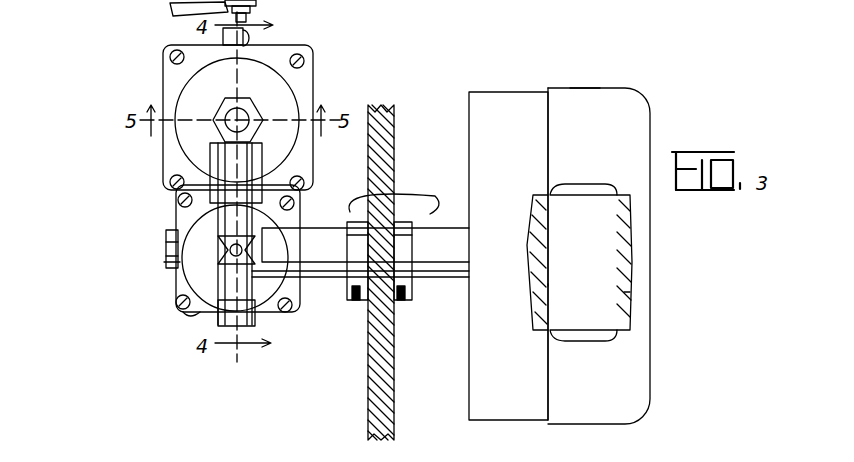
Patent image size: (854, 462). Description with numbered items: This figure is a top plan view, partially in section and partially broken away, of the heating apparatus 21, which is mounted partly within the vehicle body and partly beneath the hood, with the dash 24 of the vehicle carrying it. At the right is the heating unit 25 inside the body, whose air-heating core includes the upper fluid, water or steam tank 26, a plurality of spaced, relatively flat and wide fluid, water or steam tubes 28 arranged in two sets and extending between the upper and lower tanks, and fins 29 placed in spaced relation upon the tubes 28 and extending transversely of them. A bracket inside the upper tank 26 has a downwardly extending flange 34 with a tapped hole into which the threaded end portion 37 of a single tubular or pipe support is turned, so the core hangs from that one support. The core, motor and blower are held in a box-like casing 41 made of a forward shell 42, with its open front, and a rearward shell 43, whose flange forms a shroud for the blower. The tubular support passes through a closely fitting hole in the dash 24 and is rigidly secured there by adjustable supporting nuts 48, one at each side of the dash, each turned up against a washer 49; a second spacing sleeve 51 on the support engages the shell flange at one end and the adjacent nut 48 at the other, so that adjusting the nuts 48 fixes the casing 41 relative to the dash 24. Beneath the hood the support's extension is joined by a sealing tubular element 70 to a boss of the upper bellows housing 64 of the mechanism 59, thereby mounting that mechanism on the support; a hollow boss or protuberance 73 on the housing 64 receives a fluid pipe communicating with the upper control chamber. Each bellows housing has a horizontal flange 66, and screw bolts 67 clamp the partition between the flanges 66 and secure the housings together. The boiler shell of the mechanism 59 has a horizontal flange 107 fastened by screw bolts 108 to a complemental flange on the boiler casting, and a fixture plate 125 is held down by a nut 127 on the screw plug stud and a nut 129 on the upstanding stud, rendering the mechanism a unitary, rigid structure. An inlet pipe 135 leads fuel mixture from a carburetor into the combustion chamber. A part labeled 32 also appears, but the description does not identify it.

The heating apparatus 21 is at (470, 62).
The dash 24 is at (378, 108).
The heating unit 25 is at (580, 94).
The upper fluid, water or steam tank 26 is at (605, 222).
The fluid, water or steam tubes 28 is at (578, 190).
The fins 29 is at (612, 292).
The support 32 is at (437, 5).
The downwardly extending flange 34 is at (548, 284).
The threaded end portion 37 is at (548, 254).
The casing 41 is at (550, 90).
The forward shell 42 is at (645, 134).
The rearward shell 43 is at (480, 100).
The adjustable supporting nuts 48 is at (352, 294).
The washer 49 is at (393, 240).
The second spacing sleeve 51 is at (442, 236).
The mechanism 59 is at (103, 155).
The upper bellows housing 64 is at (188, 272).
The horizontal flange 66 is at (190, 312).
The screw bolts 67 is at (172, 192).
The tubular element 70 is at (332, 232).
The hollow boss or protuberance 73 is at (167, 252).
The horizontal flange 107 is at (165, 70).
The screw bolts 108 is at (170, 55).
The fixture plate 125 is at (200, 210).
The nut 127 is at (243, 105).
The nut 129 is at (252, 316).
The inlet pipe 135 is at (258, 42).